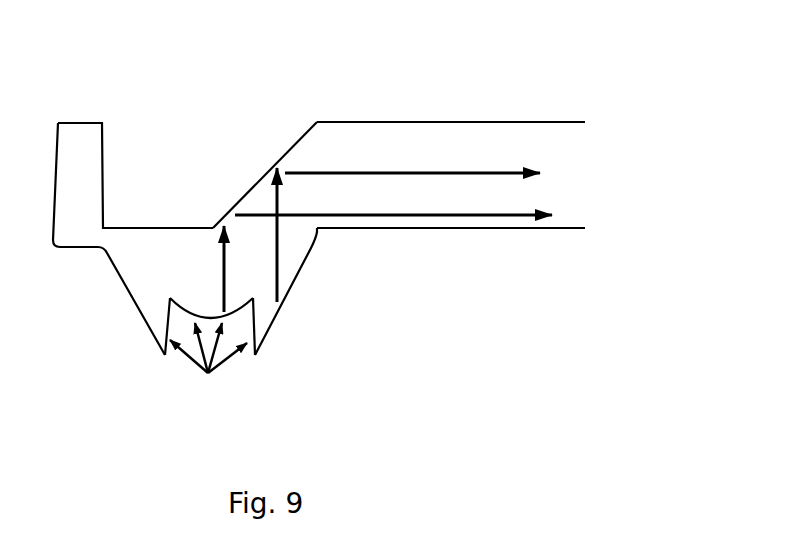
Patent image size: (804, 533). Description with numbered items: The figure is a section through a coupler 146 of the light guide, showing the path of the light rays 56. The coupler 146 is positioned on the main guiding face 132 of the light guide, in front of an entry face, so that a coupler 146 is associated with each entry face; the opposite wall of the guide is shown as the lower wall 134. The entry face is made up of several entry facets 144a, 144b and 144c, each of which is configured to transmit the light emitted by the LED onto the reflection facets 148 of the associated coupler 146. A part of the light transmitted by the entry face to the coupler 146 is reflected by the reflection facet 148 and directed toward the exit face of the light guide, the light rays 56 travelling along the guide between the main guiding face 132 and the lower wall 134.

The coupler 146 is at (197, 118).
The reflection facet 148 is at (287, 140).
The main guiding face 132 is at (560, 120).
The lower duct wall 134 is at (560, 232).
The path of the light rays 56 is at (400, 170).
The entry facet 144a is at (160, 325).
The entry facet 144b is at (198, 315).
The entry facet 144c is at (262, 337).